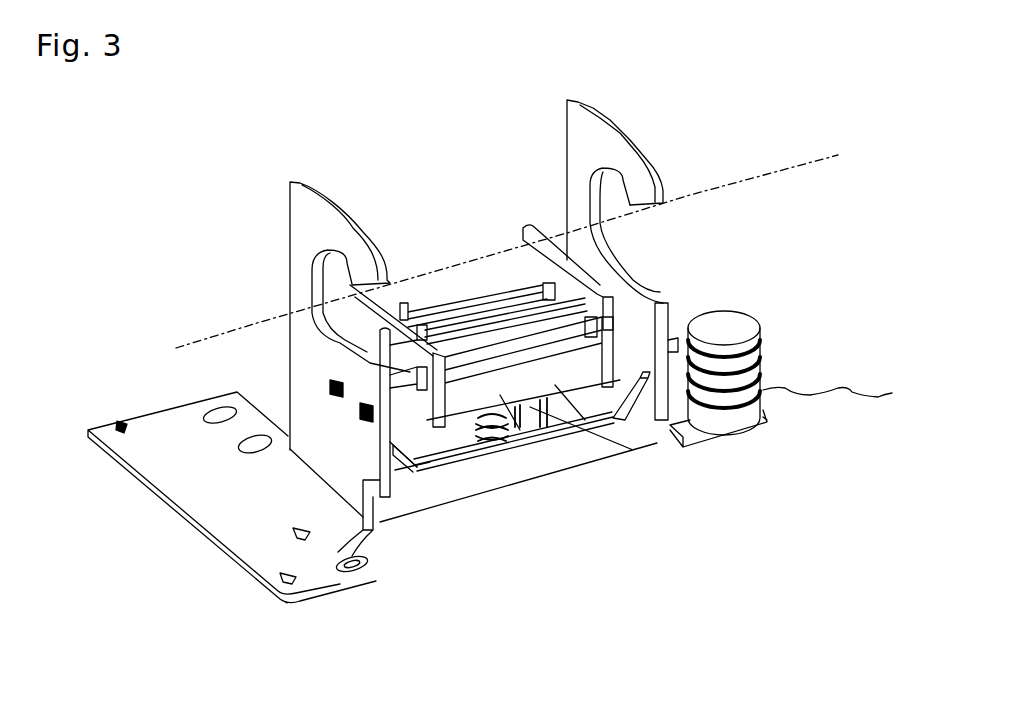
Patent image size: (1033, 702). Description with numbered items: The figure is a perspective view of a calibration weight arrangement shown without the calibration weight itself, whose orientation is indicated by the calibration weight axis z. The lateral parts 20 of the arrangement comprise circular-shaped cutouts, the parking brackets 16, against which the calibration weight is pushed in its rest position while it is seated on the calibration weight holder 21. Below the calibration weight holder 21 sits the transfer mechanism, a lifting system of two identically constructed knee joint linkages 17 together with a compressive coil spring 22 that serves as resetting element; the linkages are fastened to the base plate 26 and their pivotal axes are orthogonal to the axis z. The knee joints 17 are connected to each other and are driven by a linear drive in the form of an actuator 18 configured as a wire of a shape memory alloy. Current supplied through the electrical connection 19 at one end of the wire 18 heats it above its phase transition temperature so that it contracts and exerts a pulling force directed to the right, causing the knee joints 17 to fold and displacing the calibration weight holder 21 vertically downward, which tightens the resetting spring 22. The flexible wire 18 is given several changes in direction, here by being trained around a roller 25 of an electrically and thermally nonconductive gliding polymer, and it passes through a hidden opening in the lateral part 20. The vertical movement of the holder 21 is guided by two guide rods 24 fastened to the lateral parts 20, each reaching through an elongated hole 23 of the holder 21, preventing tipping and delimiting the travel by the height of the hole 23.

The parking bracket 16 is at (322, 218).
The knee joint linkage 17 is at (435, 442).
The actuator wire of shape memory alloy 18 is at (683, 335).
The electrical connection 19 is at (851, 396).
The lateral part 20 is at (268, 258).
The calibration weight holder 21 is at (490, 342).
The compressive coil spring 22 is at (508, 435).
The elongated hole 23 is at (378, 360).
The guide rod 24 is at (409, 437).
The roller 25 is at (735, 327).
The base plate 26 is at (240, 512).
The calibration weight axis z is at (517, 243).